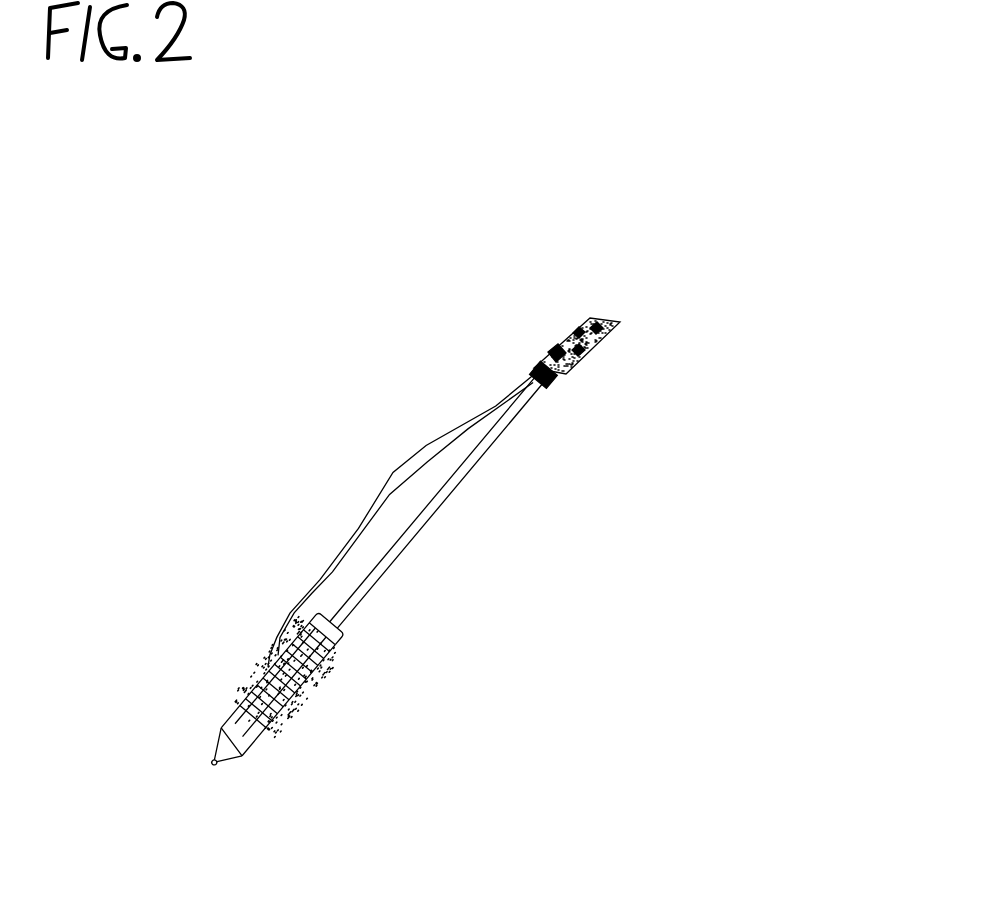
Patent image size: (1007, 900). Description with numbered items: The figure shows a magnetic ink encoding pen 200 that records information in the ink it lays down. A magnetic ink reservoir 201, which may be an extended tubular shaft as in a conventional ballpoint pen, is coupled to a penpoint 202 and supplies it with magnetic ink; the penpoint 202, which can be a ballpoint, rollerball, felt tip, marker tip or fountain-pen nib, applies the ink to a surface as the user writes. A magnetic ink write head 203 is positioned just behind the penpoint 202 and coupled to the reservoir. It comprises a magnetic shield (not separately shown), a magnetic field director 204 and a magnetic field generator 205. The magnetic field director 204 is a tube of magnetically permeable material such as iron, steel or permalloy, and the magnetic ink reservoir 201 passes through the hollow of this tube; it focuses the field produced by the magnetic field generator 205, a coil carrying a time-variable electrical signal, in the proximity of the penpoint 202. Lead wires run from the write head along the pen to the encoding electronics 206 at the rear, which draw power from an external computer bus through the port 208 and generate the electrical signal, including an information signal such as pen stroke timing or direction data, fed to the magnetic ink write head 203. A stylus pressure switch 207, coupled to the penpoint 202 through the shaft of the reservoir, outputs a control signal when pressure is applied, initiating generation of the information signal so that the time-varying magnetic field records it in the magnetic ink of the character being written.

The magnetic ink encoding pen 200 is at (705, 653).
The magnetic ink reservoir 201 is at (406, 526).
The penpoint 202 is at (207, 768).
The magnetic ink write head 203 is at (225, 644).
The magnetic field director 204 is at (255, 747).
The magnetic field generator 205 is at (325, 686).
The encoding electronics 206 is at (607, 346).
The stylus pressure switch 207 is at (550, 387).
The port 208 is at (594, 321).